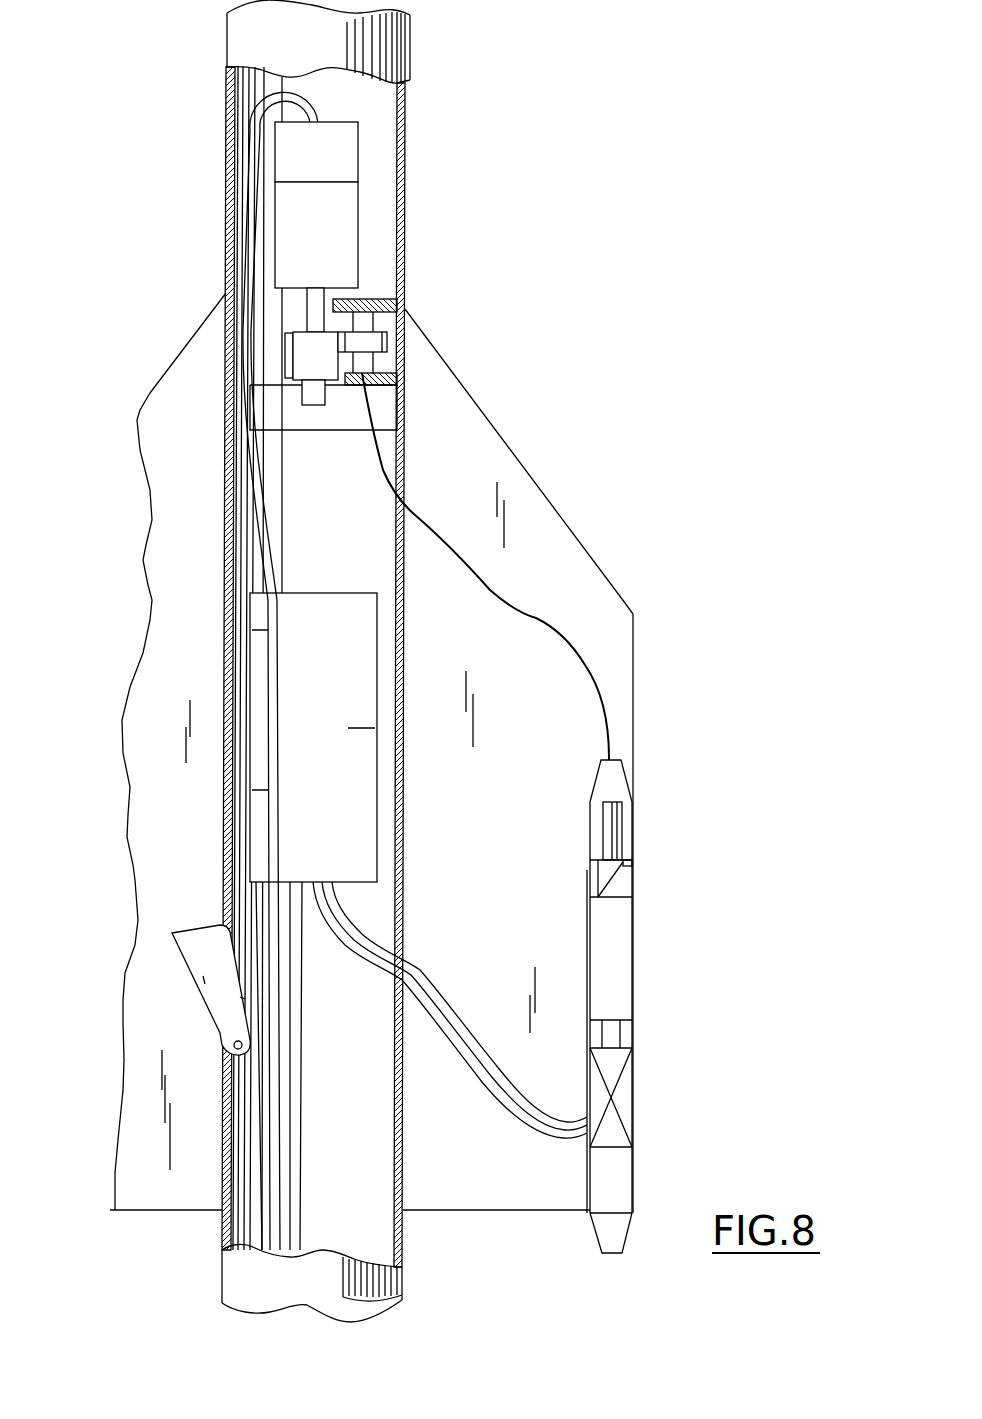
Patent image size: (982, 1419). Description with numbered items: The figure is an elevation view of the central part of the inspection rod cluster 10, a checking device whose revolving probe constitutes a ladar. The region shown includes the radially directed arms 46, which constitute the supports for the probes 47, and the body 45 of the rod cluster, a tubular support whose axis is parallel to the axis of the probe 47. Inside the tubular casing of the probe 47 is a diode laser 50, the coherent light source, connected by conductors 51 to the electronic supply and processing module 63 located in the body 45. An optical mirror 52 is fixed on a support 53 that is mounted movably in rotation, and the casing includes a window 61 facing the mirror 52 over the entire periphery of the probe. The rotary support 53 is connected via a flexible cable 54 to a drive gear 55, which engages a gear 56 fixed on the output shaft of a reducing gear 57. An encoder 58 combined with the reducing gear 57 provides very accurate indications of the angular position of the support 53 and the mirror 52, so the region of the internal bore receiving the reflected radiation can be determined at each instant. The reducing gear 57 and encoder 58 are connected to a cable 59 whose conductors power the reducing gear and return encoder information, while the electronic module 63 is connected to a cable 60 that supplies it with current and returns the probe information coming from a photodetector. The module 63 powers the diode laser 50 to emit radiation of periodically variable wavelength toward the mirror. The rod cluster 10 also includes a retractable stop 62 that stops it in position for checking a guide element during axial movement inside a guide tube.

The inspection rod cluster 10 is at (447, 277).
The body 45 is at (408, 170).
The radially directed arms 46 is at (175, 395).
The probe 47 is at (653, 1023).
The diode laser 50 is at (623, 1097).
The conductors 51 is at (508, 1105).
The optical mirror 52 is at (608, 875).
The support 53 is at (608, 822).
The flexible cable 54 is at (534, 616).
The drive gear 55 is at (387, 343).
The gear 56 is at (303, 357).
The reducing gear 57 is at (338, 230).
The encoder 58 is at (340, 152).
The cable 59 is at (265, 1226).
The cable 60 is at (303, 1218).
The window 61 is at (623, 887).
The retractable stop 62 is at (198, 951).
The electronic supply and processing module 63 is at (260, 705).